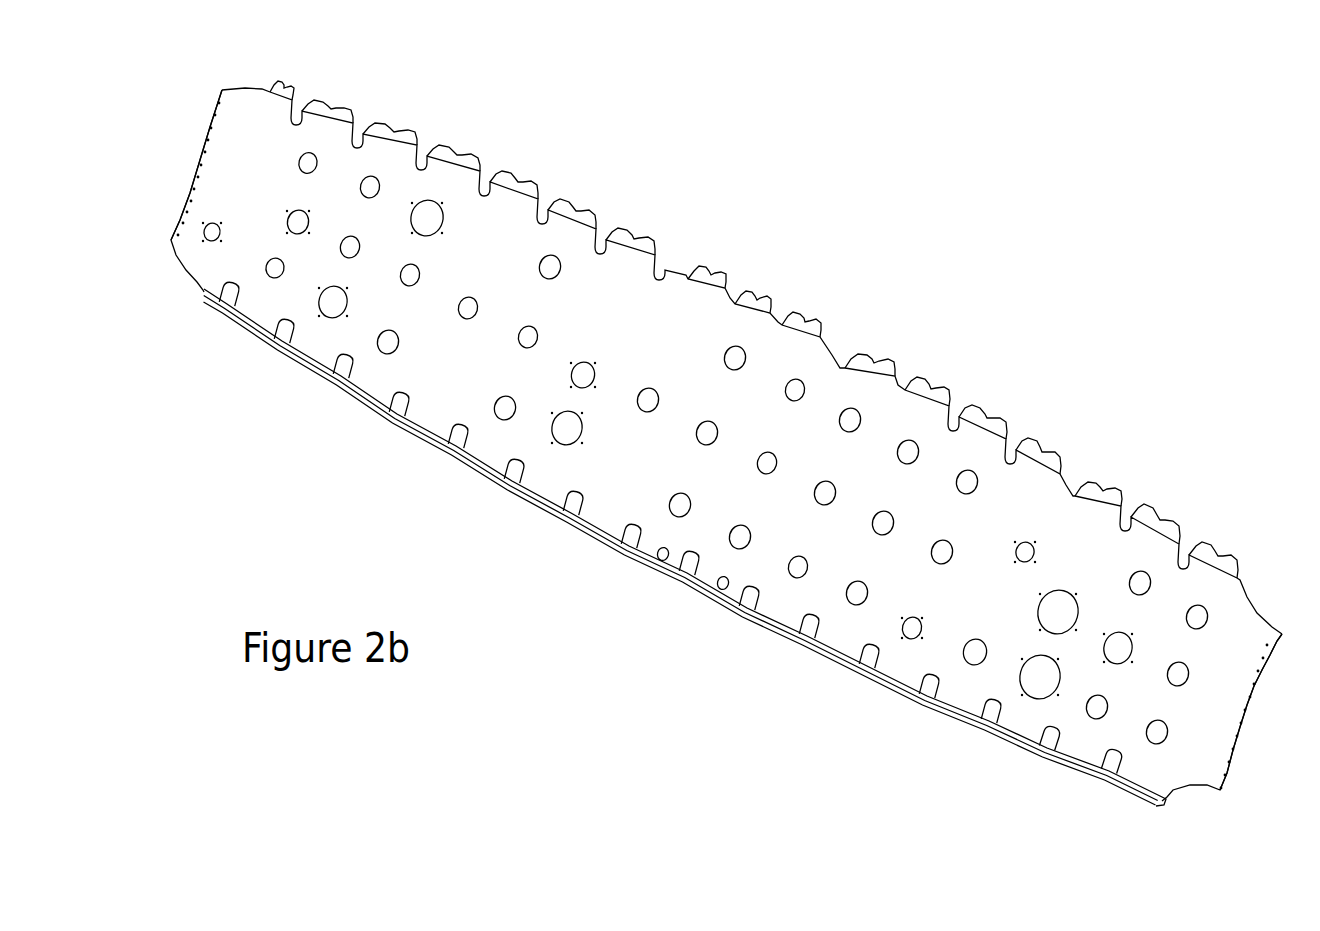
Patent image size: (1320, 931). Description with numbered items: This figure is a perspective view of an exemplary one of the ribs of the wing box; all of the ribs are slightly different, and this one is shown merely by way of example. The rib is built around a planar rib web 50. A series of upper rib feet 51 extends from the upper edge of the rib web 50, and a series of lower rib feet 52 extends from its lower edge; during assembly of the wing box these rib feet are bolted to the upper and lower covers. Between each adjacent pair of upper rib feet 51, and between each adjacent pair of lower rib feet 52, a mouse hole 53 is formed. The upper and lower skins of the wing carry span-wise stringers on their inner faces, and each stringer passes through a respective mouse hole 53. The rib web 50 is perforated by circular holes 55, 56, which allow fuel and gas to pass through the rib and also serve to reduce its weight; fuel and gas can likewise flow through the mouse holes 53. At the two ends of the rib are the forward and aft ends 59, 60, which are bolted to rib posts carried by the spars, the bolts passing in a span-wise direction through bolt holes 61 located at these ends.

The rib web 50 is at (262, 195).
The upper rib feet 51 is at (1192, 520).
The lower rib feet 52 is at (1170, 819).
The mouse holes 53 is at (1013, 447).
The circular hole 55 is at (352, 250).
The circular hole 56 is at (645, 392).
The forward end 59 is at (1237, 693).
The aft end 60 is at (215, 132).
The bolt holes 61 is at (186, 210).